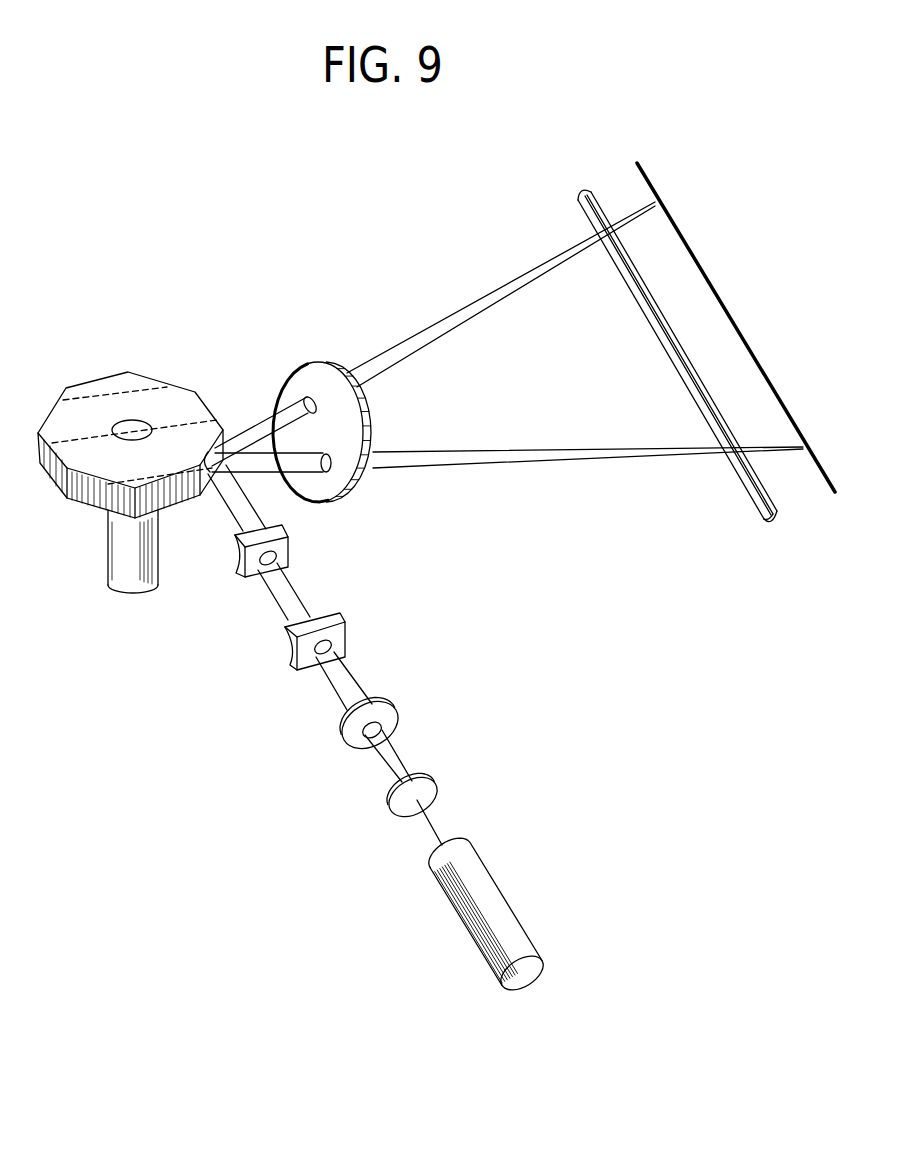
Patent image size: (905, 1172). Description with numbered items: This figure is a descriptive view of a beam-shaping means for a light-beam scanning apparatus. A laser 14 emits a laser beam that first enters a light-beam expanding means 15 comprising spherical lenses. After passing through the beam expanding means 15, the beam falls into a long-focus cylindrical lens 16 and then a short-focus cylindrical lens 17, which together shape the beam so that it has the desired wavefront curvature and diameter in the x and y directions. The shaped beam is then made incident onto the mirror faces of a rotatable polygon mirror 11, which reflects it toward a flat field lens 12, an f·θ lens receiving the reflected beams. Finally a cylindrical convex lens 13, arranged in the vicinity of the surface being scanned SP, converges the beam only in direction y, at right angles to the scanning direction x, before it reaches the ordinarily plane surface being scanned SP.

The rotatable polygon mirror 11 is at (163, 392).
The flat field lens 12 is at (313, 362).
The cylindrical convex lens 13 is at (662, 347).
The laser 14 is at (492, 902).
The light-beam expanding means 15 is at (403, 684).
The long-focus cylindrical lens 16 is at (340, 633).
The short-focus cylindrical lens 17 is at (283, 545).
The surface being scanned SP is at (703, 270).